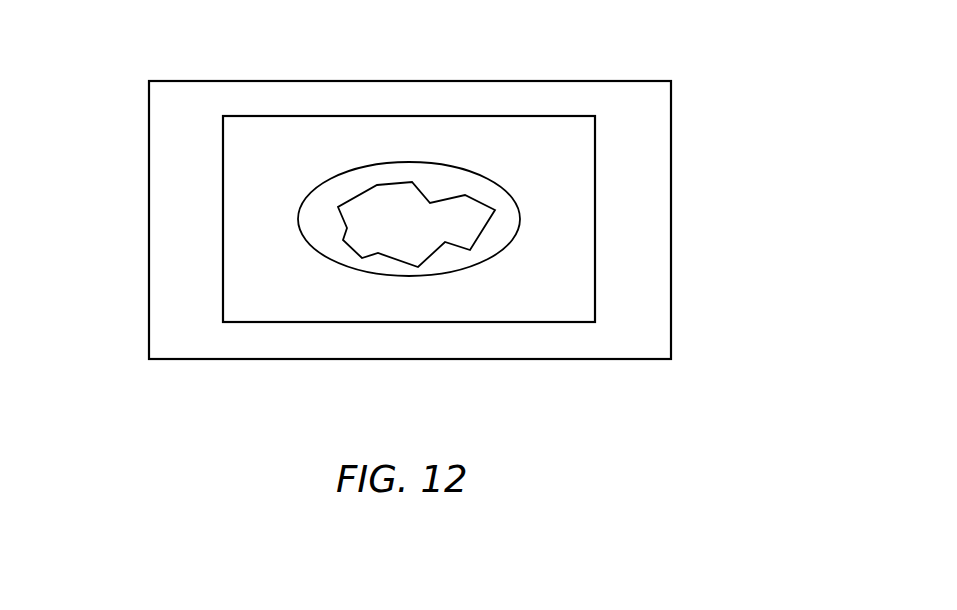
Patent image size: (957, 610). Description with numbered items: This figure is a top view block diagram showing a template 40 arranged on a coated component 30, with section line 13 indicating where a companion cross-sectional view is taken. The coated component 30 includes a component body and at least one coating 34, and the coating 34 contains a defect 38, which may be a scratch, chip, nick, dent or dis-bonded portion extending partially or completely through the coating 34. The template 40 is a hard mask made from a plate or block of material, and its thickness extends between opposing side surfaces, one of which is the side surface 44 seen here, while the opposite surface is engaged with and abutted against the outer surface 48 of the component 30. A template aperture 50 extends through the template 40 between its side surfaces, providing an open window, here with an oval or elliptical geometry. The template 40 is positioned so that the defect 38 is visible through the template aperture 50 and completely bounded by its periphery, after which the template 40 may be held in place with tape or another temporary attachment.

The coated component 30 is at (674, 130).
The template 40 is at (596, 113).
The template aperture 50 is at (501, 235).
The defect 38 is at (485, 200).
The outer surface 48 is at (240, 340).
The side surface 44 is at (311, 303).
The coating 34 is at (649, 338).
The section line 13- 13 is at (122, 220).